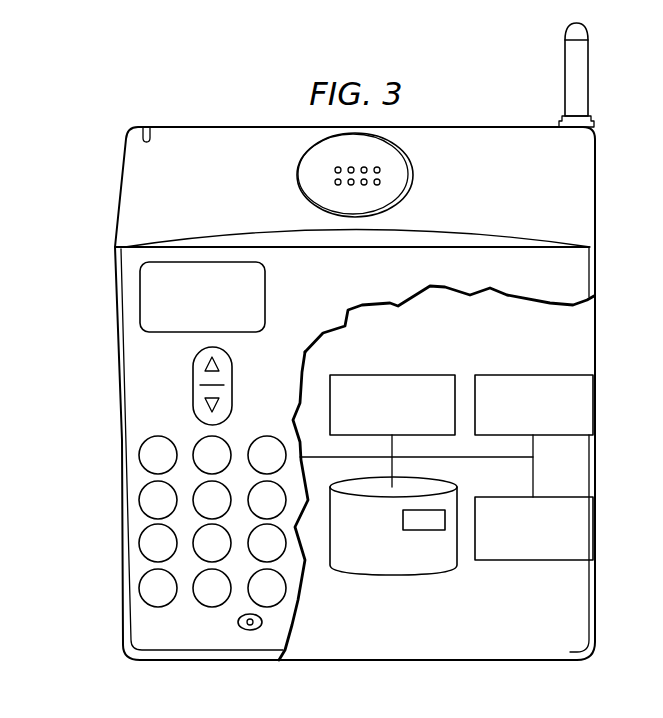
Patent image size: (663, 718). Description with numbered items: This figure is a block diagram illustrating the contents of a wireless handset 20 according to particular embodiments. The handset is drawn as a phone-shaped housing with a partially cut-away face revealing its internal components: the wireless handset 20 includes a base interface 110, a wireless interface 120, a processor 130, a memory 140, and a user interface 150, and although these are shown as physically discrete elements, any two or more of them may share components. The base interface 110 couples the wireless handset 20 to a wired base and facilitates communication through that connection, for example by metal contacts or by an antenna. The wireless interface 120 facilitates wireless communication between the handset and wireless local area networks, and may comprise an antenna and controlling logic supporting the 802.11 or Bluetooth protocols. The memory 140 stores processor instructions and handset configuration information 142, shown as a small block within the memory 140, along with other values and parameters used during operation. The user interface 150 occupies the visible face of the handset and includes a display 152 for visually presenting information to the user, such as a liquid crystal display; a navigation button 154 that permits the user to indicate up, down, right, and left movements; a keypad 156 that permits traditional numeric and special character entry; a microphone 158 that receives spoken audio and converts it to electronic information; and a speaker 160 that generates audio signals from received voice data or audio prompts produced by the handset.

The wireless handset 20 is at (484, 69).
The user interface 150 is at (115, 198).
The microphone 158 is at (413, 173).
The display 152 is at (266, 283).
The navigation button 154 is at (232, 363).
The keypad 156 is at (173, 417).
The speaker 160 is at (238, 622).
The processor 130 is at (401, 375).
The wireless interface 120 is at (544, 375).
The handset configuration information 142 is at (403, 517).
The memory 140 is at (402, 582).
The base interface 110 is at (543, 562).